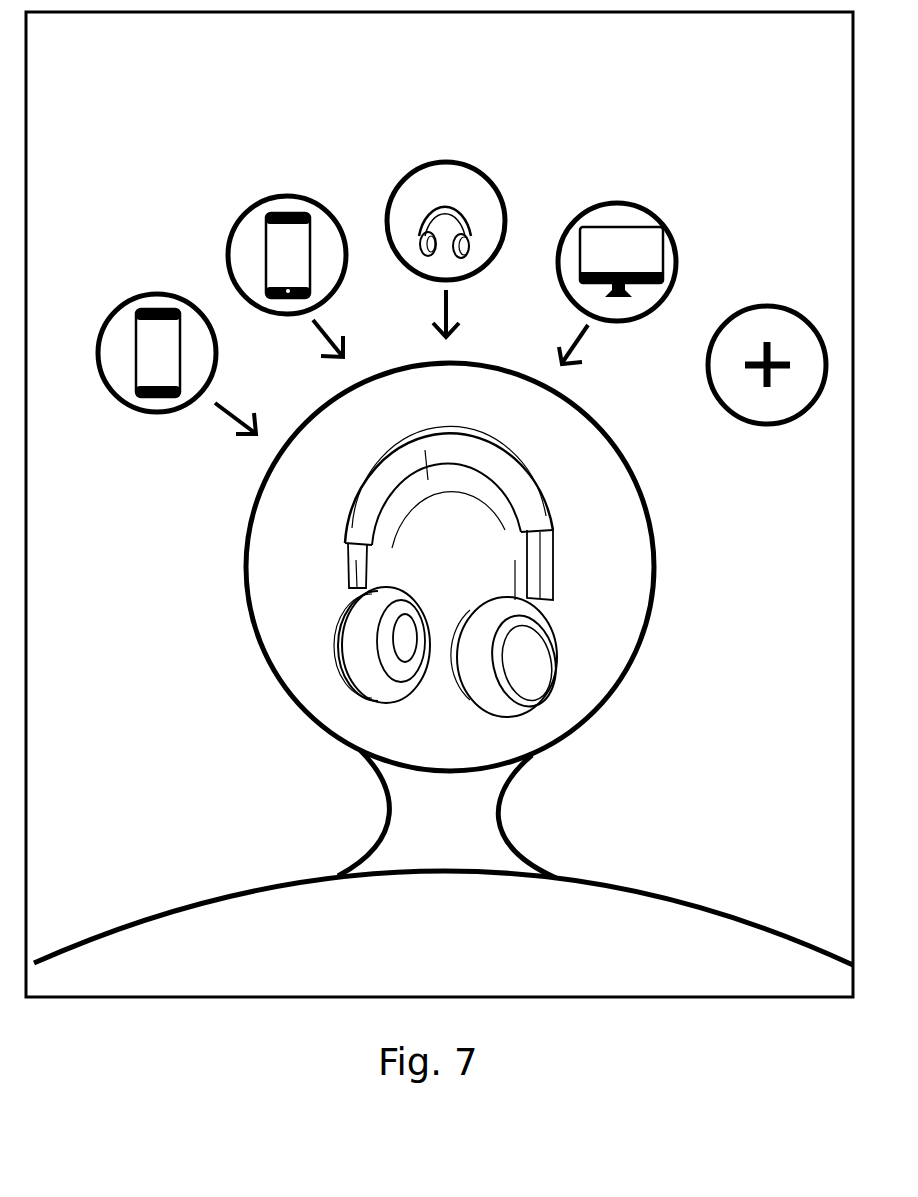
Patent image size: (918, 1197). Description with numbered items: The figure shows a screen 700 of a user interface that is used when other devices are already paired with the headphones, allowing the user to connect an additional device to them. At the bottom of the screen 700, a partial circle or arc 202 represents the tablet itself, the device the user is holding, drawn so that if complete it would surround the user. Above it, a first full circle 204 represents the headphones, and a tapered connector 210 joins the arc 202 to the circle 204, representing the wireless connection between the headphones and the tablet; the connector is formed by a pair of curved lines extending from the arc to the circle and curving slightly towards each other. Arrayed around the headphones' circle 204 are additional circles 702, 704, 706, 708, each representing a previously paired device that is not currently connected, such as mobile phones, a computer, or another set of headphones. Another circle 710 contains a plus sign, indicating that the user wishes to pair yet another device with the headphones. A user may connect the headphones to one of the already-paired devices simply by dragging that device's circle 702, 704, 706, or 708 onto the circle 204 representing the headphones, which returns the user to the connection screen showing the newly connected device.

The screen 700 is at (93, 57).
The circle 702 is at (134, 297).
The circle 704 is at (243, 220).
The circle 706 is at (405, 172).
The circle 708 is at (637, 203).
The circle 710 is at (788, 308).
The first full circle 204 is at (572, 740).
The tapered connector 210 is at (382, 838).
The partial circle or arc 202 is at (734, 920).